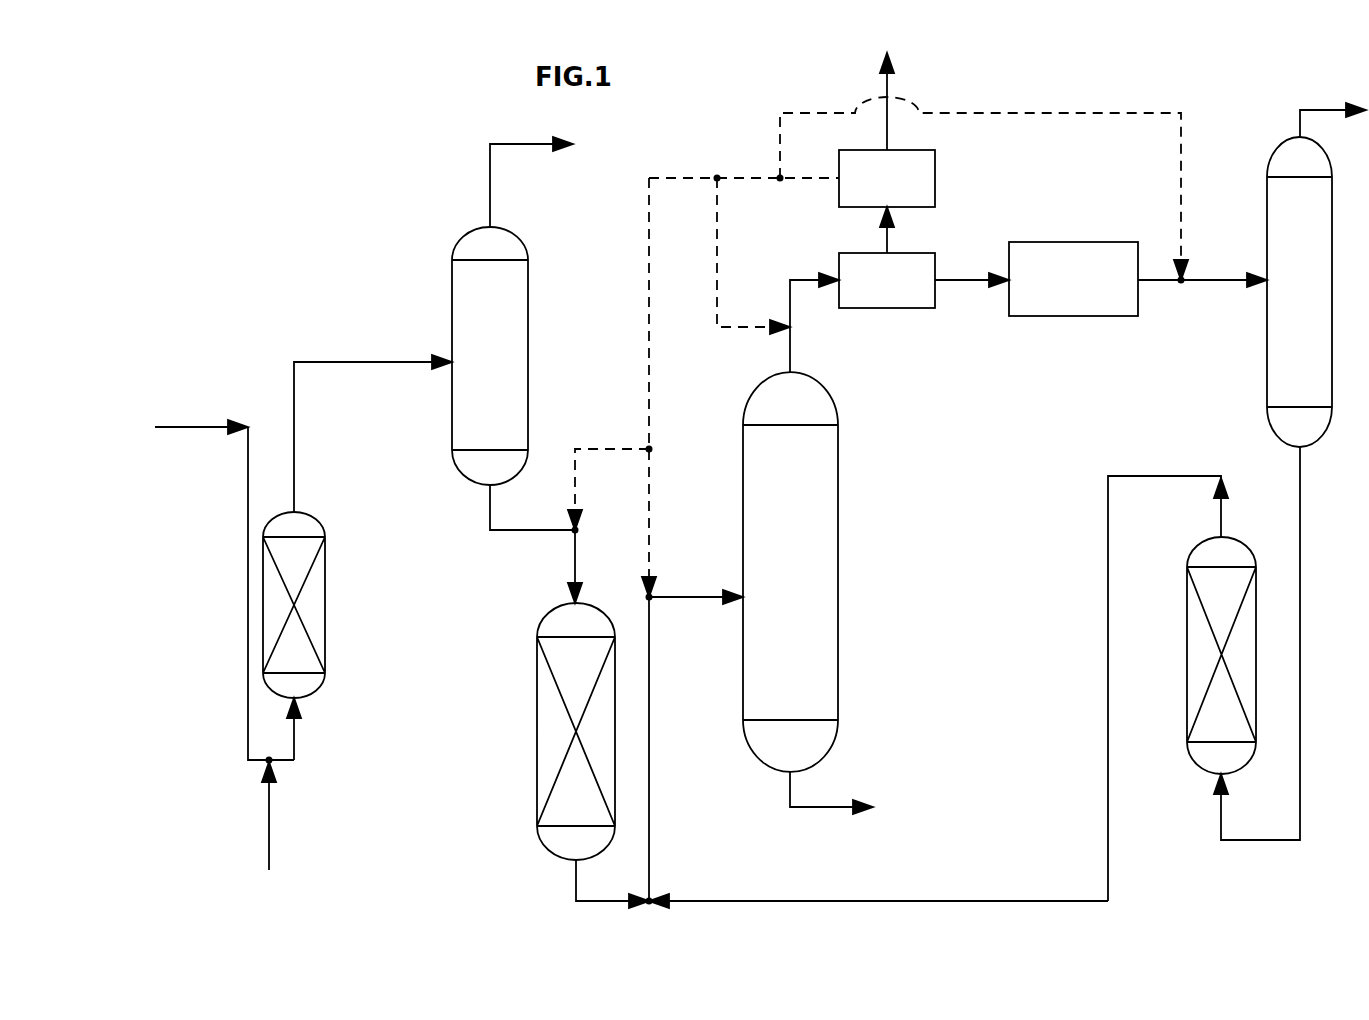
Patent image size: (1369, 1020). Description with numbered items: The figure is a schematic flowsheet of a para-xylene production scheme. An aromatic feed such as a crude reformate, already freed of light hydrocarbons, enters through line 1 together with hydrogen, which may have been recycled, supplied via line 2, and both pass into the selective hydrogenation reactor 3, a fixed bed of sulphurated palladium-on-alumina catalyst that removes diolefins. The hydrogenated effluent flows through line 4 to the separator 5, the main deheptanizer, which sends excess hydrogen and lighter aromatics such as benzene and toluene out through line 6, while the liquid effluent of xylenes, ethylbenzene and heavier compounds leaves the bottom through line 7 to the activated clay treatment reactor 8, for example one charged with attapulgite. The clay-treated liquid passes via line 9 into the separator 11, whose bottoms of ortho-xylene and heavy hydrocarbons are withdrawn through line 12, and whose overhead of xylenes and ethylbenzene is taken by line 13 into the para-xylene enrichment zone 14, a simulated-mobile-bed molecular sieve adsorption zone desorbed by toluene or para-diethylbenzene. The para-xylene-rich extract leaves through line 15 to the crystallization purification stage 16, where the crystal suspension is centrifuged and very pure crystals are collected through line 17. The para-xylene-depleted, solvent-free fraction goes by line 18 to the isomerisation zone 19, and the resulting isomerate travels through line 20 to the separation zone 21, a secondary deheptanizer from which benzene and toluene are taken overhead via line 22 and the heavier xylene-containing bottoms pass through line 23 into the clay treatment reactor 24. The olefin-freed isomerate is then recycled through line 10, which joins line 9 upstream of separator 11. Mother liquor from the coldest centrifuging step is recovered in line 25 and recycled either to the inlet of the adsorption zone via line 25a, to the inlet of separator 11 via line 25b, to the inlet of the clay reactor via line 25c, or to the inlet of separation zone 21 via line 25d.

The line 1 is at (199, 428).
The line 2 is at (269, 803).
The selective hydrogenation reactor 3 is at (300, 578).
The line 4 is at (338, 363).
The separator 5 is at (498, 303).
The line 6 is at (530, 145).
The line 7 is at (537, 530).
The activated clay treatment reactor 8 is at (582, 678).
The line 9 is at (650, 745).
The line 10 is at (916, 902).
The separator 11 is at (804, 507).
The line 12 is at (808, 807).
The line 13 is at (791, 312).
The para-xylene enrichment zone 14 is at (903, 296).
The line 15 is at (890, 230).
The separator 16 is at (903, 196).
The line 17 is at (889, 131).
The line 18 is at (960, 284).
The isomerisation zone 19 is at (1090, 300).
The line 20 is at (1215, 285).
The separation zone 21 is at (1315, 228).
The line 22 is at (1338, 112).
The line 23 is at (1302, 562).
The clay treatment reactor 24 is at (1237, 603).
The line 25 is at (779, 177).
The line 25a is at (718, 228).
The line 25b is at (650, 462).
The line 25c is at (626, 449).
The line 25d is at (1070, 113).